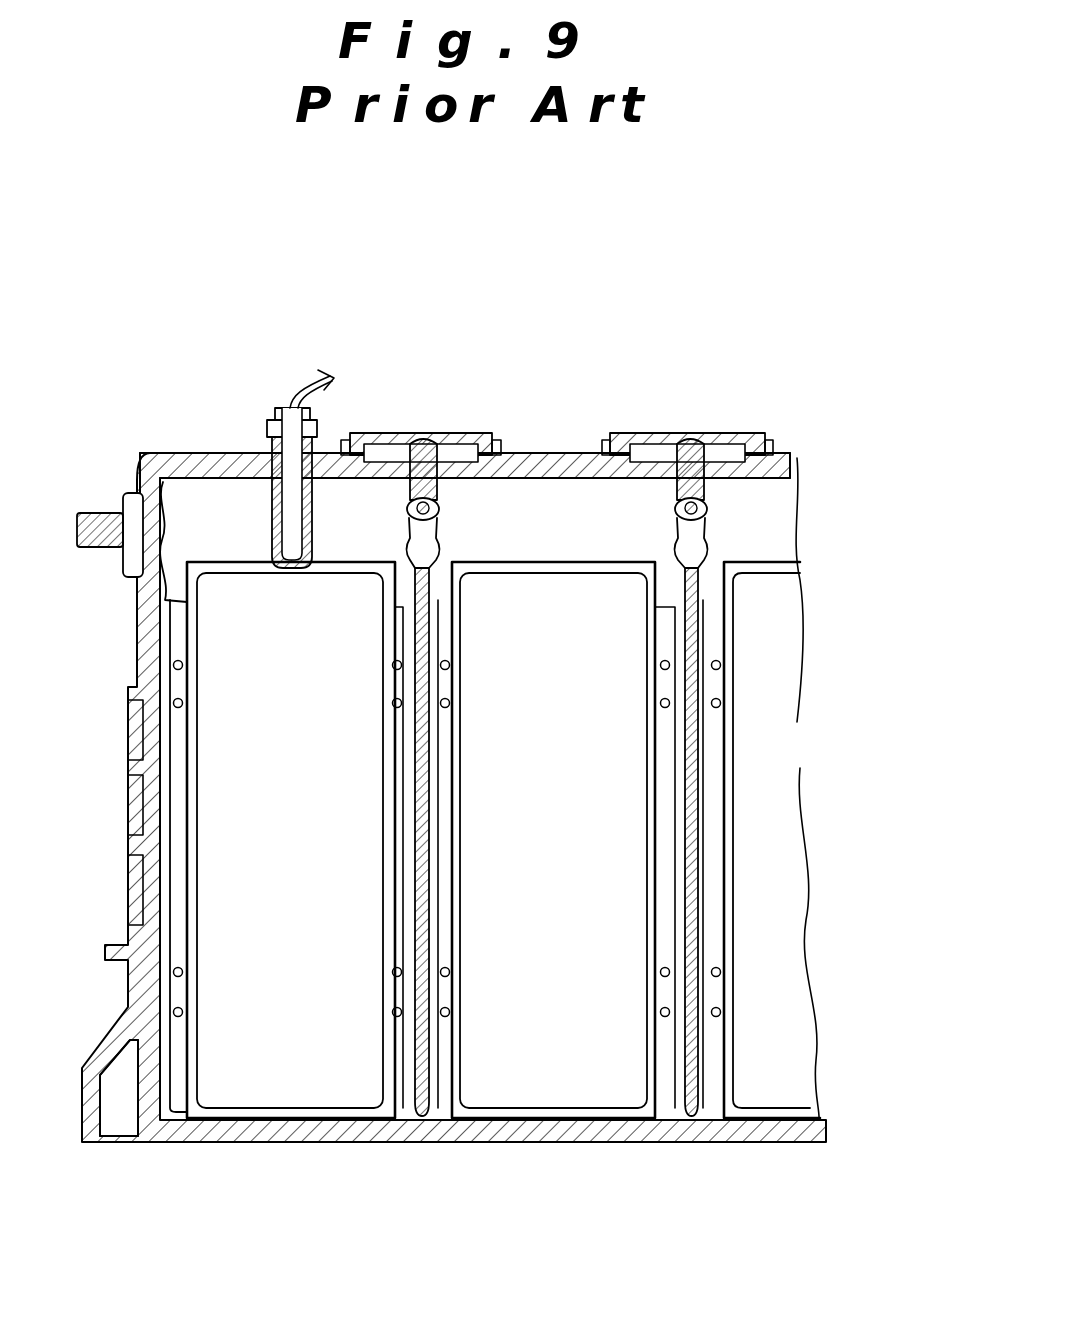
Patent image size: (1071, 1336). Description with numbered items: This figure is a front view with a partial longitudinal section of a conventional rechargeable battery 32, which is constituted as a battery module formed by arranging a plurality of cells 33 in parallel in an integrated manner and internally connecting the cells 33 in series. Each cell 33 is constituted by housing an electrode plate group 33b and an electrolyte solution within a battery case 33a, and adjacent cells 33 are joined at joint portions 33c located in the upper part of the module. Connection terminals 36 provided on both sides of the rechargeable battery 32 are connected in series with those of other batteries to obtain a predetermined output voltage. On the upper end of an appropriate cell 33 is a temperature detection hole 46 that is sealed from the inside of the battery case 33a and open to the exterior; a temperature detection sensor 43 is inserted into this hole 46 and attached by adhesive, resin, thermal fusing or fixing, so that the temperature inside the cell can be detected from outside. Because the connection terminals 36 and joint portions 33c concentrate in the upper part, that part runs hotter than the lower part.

The rechargeable battery 32 is at (560, 416).
The cell 33 is at (275, 1102).
The battery case 33a is at (253, 547).
The electrode plate group 33b is at (322, 858).
The joint portion 33c is at (437, 527).
The connection terminal 36 is at (100, 510).
The temperature detection sensor 43 is at (290, 460).
The temperature detection hole 46 is at (284, 506).